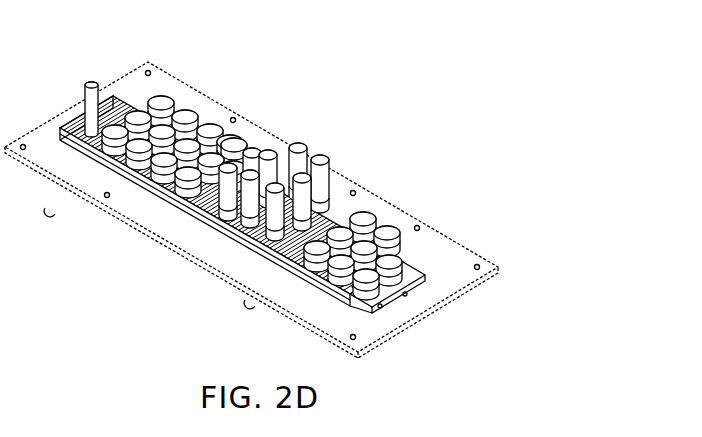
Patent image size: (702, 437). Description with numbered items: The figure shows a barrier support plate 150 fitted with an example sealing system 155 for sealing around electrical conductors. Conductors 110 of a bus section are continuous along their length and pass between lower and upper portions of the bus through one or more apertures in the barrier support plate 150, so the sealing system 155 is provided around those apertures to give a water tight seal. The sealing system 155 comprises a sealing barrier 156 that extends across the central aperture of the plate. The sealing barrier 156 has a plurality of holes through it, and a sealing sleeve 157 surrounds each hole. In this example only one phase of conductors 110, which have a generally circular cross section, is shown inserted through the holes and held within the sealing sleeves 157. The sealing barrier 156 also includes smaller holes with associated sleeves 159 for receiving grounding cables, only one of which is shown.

The conductors 110 is at (297, 147).
The barrier support plate 150 is at (396, 207).
The sealing system 155 is at (259, 208).
The sealing barrier 156 is at (152, 180).
The sealing sleeve 157 is at (252, 209).
The sleeves for grounding cables 159 is at (88, 132).